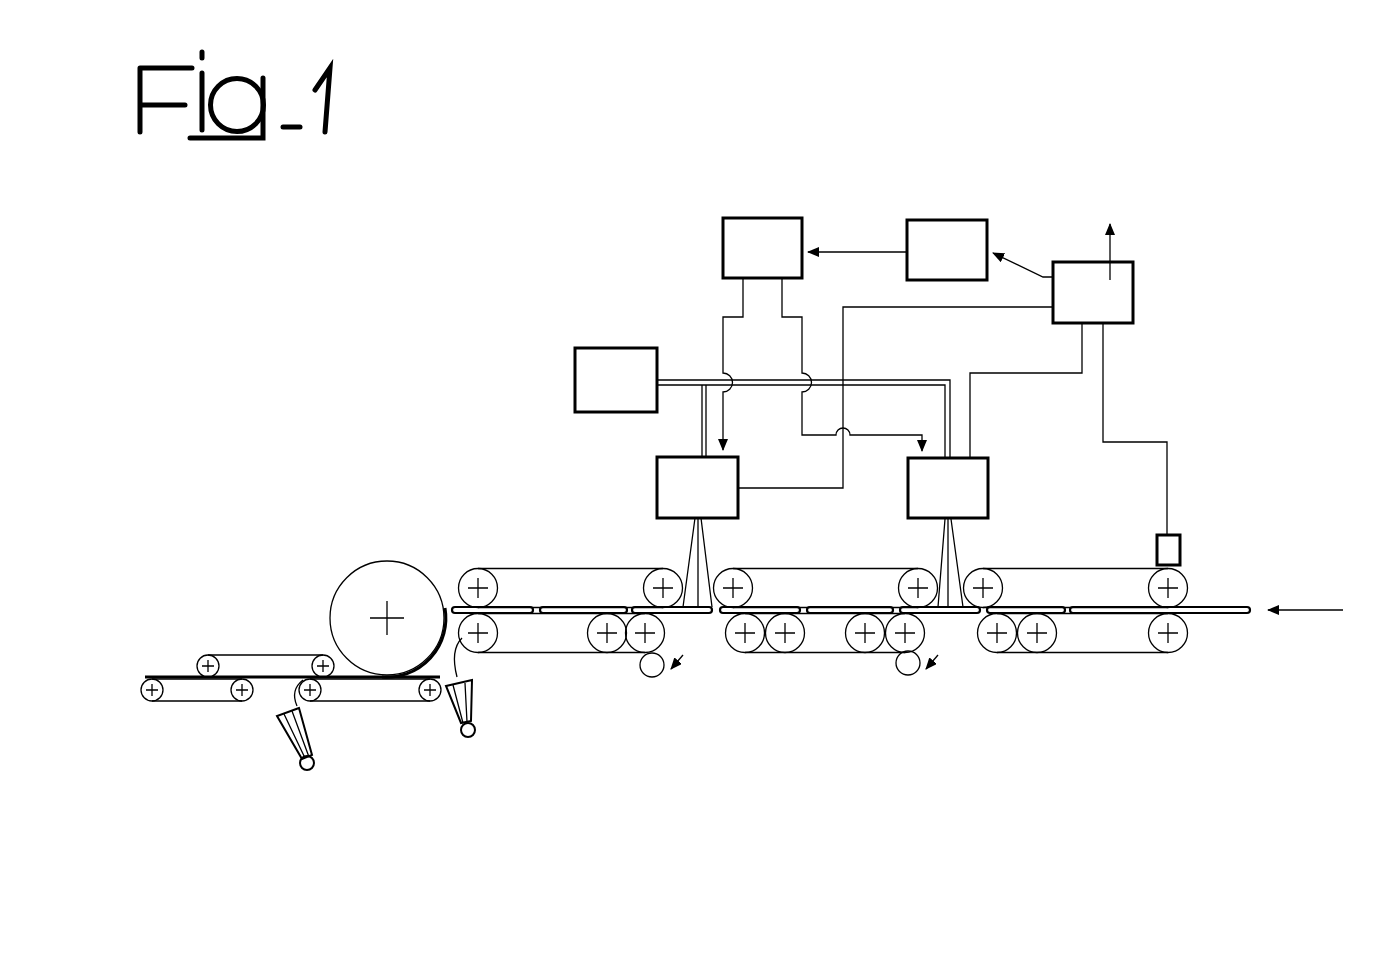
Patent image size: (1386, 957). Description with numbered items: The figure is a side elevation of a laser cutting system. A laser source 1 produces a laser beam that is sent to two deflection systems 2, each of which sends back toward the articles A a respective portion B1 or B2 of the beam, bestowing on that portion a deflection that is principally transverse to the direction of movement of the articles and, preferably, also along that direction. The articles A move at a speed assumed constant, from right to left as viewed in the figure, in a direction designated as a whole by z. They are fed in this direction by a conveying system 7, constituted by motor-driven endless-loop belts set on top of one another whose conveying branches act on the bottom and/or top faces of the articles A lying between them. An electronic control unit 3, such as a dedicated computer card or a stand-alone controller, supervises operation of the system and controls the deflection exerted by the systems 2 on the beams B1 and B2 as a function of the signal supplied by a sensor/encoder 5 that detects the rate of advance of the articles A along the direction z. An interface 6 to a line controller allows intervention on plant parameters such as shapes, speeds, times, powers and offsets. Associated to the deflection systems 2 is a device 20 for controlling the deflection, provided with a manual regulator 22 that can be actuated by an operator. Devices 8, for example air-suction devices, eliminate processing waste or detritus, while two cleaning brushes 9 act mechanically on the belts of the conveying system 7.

The laser source 1 is at (628, 357).
The deflection systems 2 is at (665, 474).
The electronic control unit 3 is at (1128, 303).
The sensor/encoder 5 is at (1157, 540).
The interface to a line controller 6 is at (1113, 222).
The conveying system 7 is at (553, 680).
The devices for elimination of processing waste 8 is at (307, 770).
The cleaning brushes 9 is at (650, 677).
The device for controlling the deflection 20 is at (787, 230).
The manual regulator 22 is at (970, 230).
The articles A is at (213, 702).
The first laser beam portion B1 is at (699, 557).
The second laser beam portion B2 is at (948, 557).
The direction of movement z is at (1316, 610).